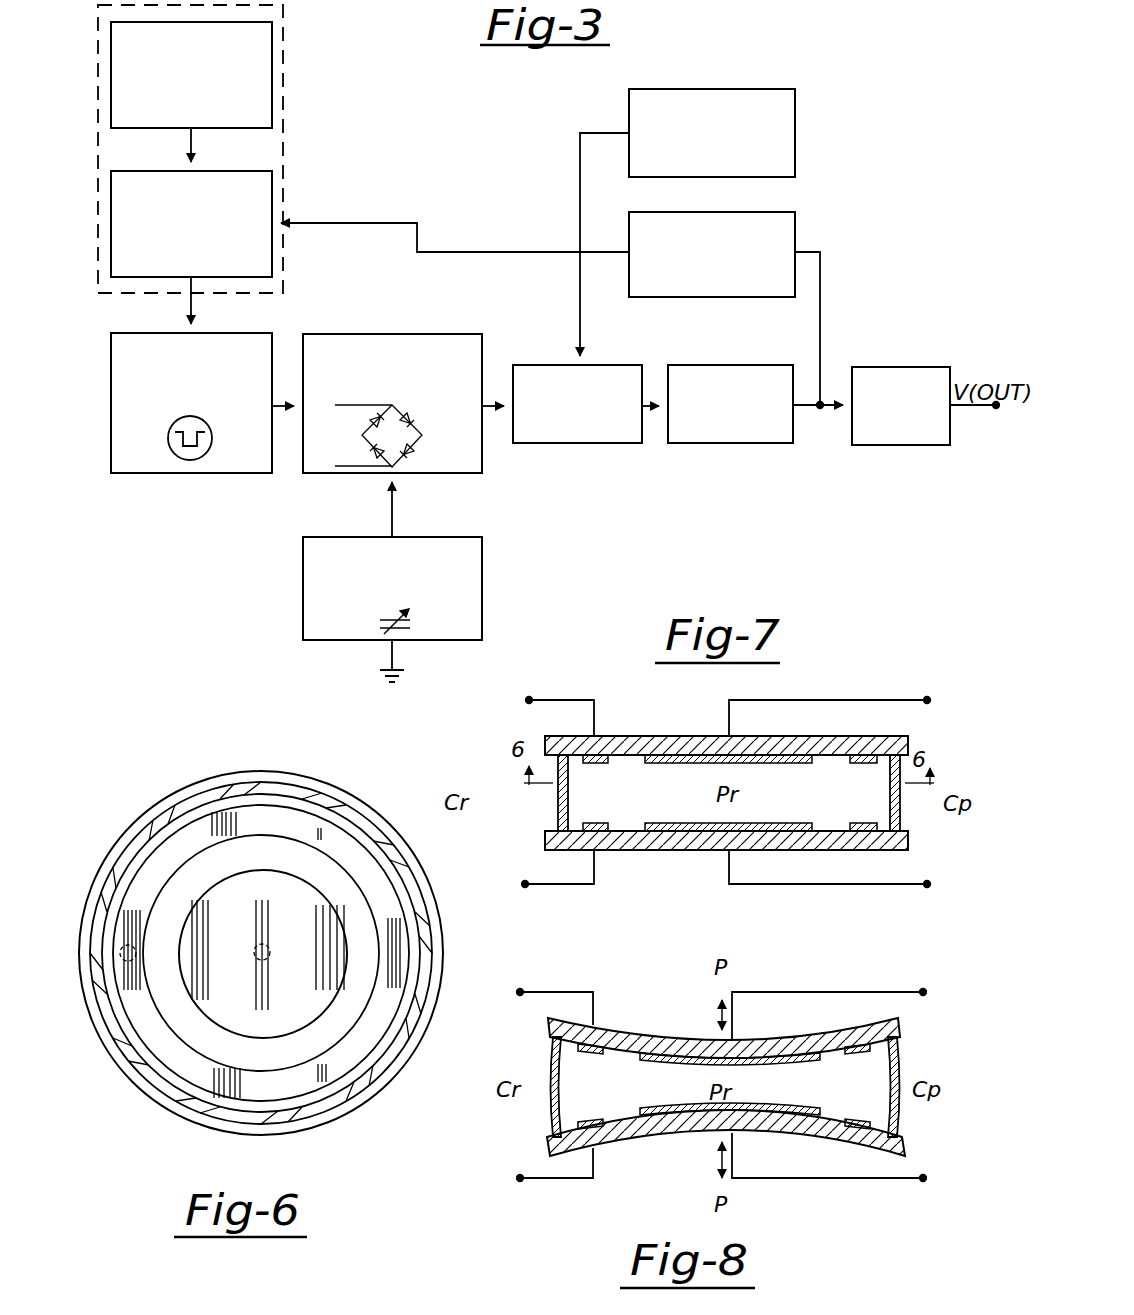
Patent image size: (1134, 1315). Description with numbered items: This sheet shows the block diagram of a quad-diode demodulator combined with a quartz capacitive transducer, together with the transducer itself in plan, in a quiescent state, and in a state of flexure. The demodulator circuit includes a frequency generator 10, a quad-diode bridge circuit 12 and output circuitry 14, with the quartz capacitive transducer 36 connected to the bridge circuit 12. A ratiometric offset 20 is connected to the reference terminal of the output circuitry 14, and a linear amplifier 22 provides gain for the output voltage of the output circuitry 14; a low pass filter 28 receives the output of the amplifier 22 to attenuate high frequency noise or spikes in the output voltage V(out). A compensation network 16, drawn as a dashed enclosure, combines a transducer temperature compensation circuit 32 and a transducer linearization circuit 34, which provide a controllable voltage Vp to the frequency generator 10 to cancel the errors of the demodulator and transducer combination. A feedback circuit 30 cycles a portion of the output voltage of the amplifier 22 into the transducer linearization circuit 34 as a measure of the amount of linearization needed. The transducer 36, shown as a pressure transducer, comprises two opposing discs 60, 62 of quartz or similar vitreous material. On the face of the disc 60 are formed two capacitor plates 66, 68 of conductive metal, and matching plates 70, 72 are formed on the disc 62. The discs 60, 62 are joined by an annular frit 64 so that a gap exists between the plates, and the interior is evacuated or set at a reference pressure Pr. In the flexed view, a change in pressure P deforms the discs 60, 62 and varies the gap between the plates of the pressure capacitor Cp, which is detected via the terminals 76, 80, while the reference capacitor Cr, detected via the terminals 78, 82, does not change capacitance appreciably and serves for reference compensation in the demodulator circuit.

In FIG. 3, the frequency generator 10 is at (203, 474).
In FIG. 3, the quad-diode bridge circuit 12 is at (353, 333).
In FIG. 3, the output circuitry 14 is at (562, 445).
In FIG. 3, the compensation network 16 is at (283, 127).
In FIG. 3, the ratiometric offset 20 is at (795, 122).
In FIG. 3, the linear amplifier 22 is at (720, 445).
In FIG. 3, the low pass filter 28 is at (885, 447).
In FIG. 3, the feedback circuit 30 is at (795, 227).
In FIG. 3, the transducer temperature compensation circuit 32 is at (272, 62).
In FIG. 3, the transducer linearization circuit 34 is at (272, 266).
In FIG. 3, the quartz capacitive transducer 36 is at (482, 587).
In FIG. 6, the disc 60 is at (272, 771).
In FIG. 7, the disc 60 is at (908, 744).
In FIG. 8, the disc 60 is at (548, 1025).
In FIG. 7, the disc 62 is at (908, 839).
In FIG. 8, the disc 62 is at (902, 1148).
In FIG. 6, the annular frit 64 is at (228, 1122).
In FIG. 7, the annular frit 64 is at (558, 802).
In FIG. 8, the annular frit 64 is at (725, 1087).
In FIG. 6, the capacitor plate 66 is at (300, 936).
In FIG. 7, the capacitor plate 66 is at (670, 757).
In FIG. 8, the capacitor plate 66 is at (657, 1056).
In FIG. 6, the capacitor plate 68 is at (300, 820).
In FIG. 7, the capacitor plate 68 is at (880, 744).
In FIG. 8, the capacitor plate 68 is at (850, 1052).
In FIG. 7, the capacitor plate 70 is at (682, 828).
In FIG. 8, the capacitor plate 70 is at (657, 1117).
In FIG. 7, the capacitor plate 72 is at (597, 831).
In FIG. 8, the capacitor plate 72 is at (605, 1095).
In FIG. 7, the terminal 76 is at (842, 700).
In FIG. 8, the terminal 76 is at (925, 993).
In FIG. 7, the terminal 78 is at (541, 711).
In FIG. 8, the terminal 78 is at (533, 997).
In FIG. 7, the terminal 80 is at (892, 886).
In FIG. 8, the terminal 80 is at (923, 1180).
In FIG. 7, the terminal 82 is at (535, 877).
In FIG. 8, the terminal 82 is at (527, 1169).